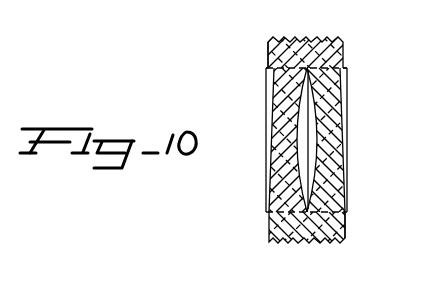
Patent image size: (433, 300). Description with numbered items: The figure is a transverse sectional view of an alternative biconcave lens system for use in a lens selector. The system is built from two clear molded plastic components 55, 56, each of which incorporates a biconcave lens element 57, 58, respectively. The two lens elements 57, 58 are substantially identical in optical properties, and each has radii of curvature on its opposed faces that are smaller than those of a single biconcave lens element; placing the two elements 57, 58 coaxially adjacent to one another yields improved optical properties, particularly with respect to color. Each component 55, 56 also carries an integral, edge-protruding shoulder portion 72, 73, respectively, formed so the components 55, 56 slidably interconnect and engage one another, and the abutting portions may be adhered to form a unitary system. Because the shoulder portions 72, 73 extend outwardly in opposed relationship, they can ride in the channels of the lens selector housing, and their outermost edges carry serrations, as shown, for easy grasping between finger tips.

The component 55 is at (338, 222).
The component 56 is at (270, 53).
The biconcave lens element 57 is at (338, 147).
The biconcave lens element 58 is at (276, 145).
The shoulder portion 72 is at (338, 56).
The shoulder portion 73 is at (308, 243).